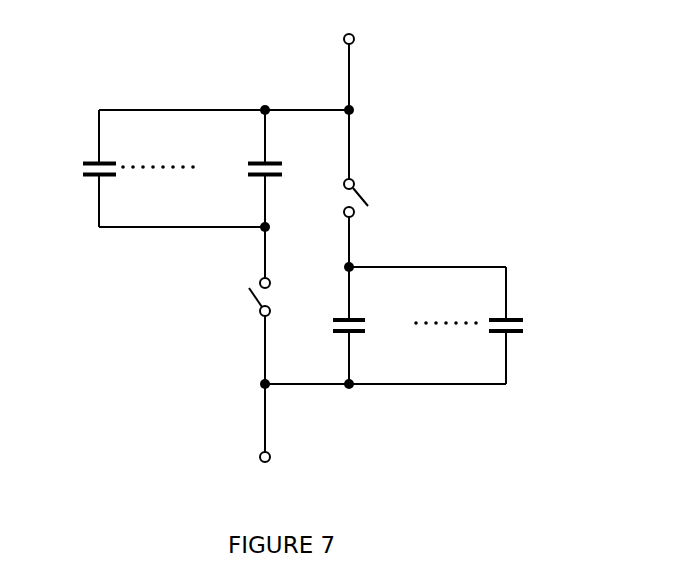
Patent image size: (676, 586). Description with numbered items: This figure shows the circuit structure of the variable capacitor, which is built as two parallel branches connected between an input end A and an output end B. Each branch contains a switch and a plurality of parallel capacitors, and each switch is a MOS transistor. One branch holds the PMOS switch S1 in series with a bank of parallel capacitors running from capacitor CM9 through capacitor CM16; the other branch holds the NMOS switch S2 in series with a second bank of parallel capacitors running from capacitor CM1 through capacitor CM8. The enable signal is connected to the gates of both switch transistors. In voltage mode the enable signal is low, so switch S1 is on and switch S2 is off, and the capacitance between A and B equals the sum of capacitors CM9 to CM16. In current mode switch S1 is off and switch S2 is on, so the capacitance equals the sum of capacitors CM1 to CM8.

The input end A is at (348, 23).
The output end B is at (266, 472).
The switch S1 is at (342, 198).
The switch S2 is at (245, 298).
The capacitor CM8 is at (78, 171).
The capacitor CM1 is at (243, 171).
The capacitor CM9 is at (371, 329).
The capacitor CM16 is at (533, 329).